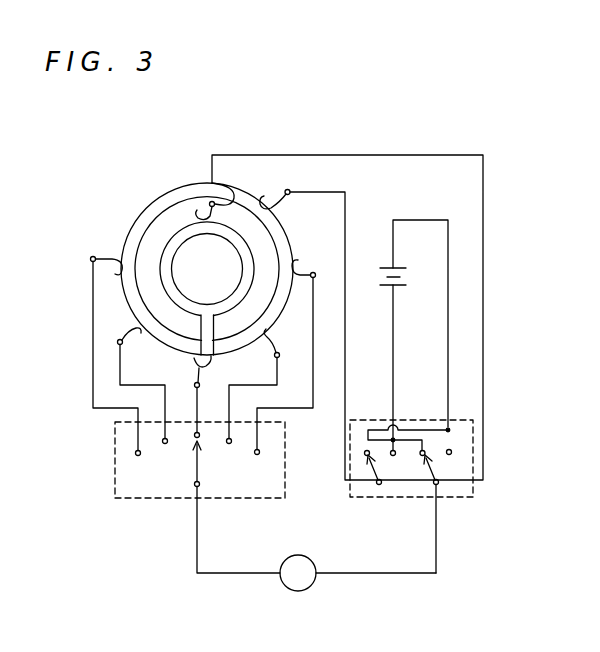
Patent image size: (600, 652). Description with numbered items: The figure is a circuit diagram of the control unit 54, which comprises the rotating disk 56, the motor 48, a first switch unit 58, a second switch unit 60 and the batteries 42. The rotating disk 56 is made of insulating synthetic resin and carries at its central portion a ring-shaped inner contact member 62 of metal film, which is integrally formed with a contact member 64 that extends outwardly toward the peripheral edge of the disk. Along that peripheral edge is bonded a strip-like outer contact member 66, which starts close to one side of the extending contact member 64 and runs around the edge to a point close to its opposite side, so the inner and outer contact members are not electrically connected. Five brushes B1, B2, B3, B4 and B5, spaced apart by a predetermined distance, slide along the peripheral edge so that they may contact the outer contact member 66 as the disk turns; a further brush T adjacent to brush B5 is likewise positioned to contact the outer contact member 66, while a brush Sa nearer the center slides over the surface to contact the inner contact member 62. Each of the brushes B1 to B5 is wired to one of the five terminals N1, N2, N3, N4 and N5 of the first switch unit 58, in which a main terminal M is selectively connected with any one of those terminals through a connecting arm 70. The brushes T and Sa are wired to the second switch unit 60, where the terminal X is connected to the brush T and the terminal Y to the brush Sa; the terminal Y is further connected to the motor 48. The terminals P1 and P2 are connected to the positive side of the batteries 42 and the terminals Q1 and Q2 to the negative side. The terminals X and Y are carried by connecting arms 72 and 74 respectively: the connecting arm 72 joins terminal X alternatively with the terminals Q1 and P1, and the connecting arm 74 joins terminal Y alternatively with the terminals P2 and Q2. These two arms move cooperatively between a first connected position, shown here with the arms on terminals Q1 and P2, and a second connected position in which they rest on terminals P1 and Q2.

The control unit 54 is at (435, 134).
The rotating disk 56 is at (187, 207).
The brush Sa is at (215, 202).
The brush T is at (275, 188).
The outer contact member 66 is at (150, 208).
The brush B1 is at (110, 258).
The brush B2 is at (138, 330).
The brush B3 is at (208, 357).
The brush B4 is at (268, 333).
The brush B5 is at (305, 268).
The inner contact member 62 is at (162, 270).
The contact member 64 is at (198, 335).
The batteries 42 is at (380, 270).
The terminal P1 is at (390, 450).
The terminal P2 is at (422, 450).
The terminal Q1 is at (364, 452).
The terminal Q2 is at (451, 451).
The terminal N1 is at (136, 455).
The terminal N2 is at (165, 444).
The terminal N3 is at (199, 438).
The terminal N4 is at (231, 444).
The terminal N5 is at (259, 454).
The first switch unit 58 is at (133, 498).
The second switch unit 60 is at (478, 497).
The connecting arm 70 is at (196, 465).
The main terminal M is at (199, 487).
The connecting arm 72 is at (378, 484).
The terminal X is at (373, 472).
The terminal Y is at (434, 484).
The connecting arm 74 is at (430, 467).
The motor 48 is at (313, 584).